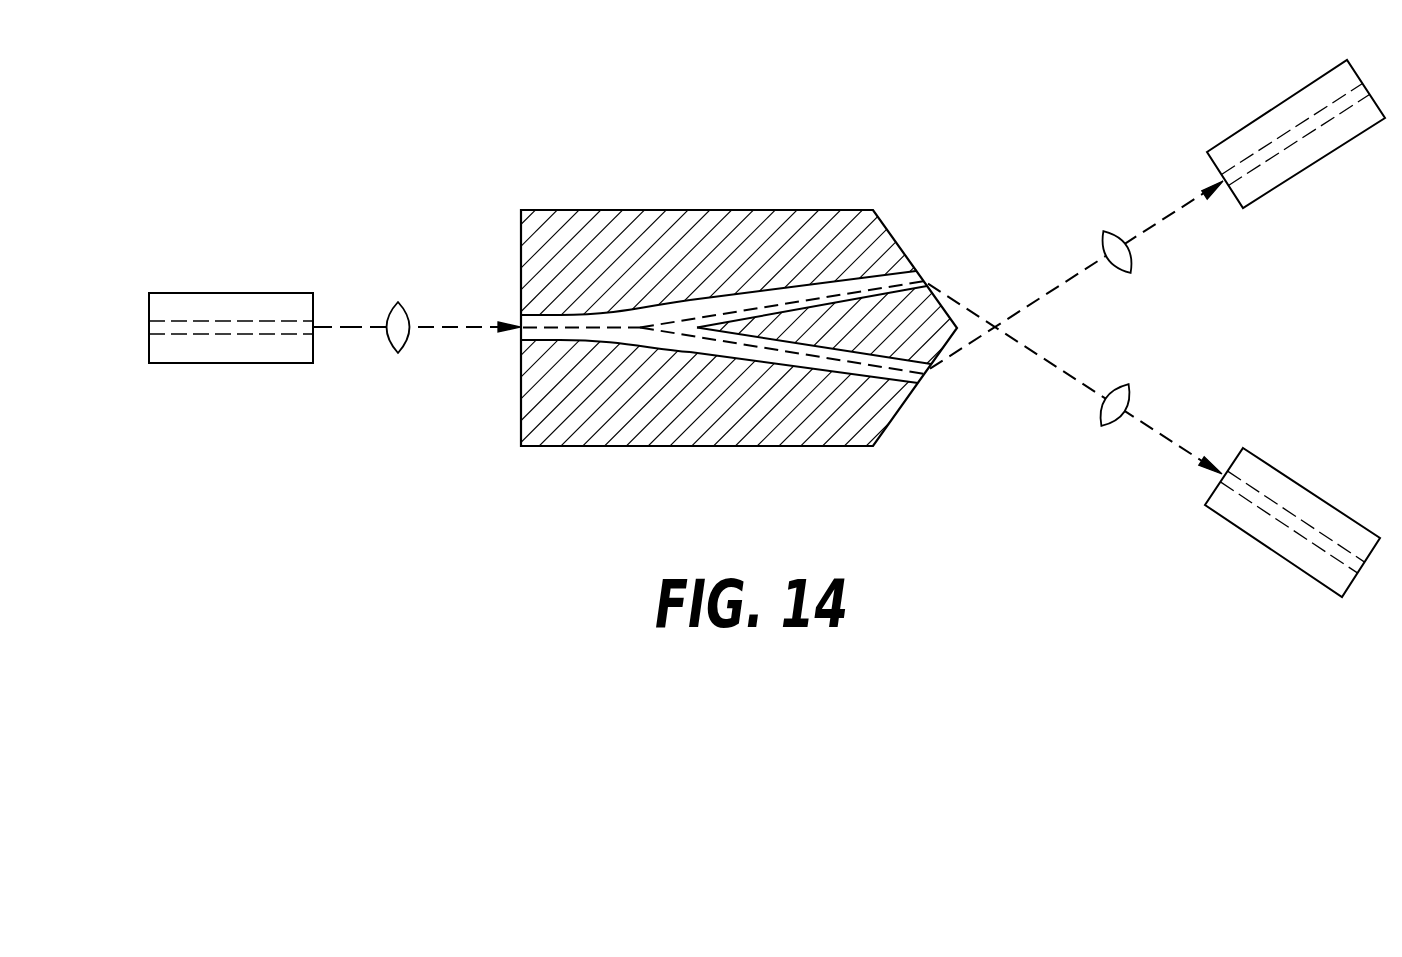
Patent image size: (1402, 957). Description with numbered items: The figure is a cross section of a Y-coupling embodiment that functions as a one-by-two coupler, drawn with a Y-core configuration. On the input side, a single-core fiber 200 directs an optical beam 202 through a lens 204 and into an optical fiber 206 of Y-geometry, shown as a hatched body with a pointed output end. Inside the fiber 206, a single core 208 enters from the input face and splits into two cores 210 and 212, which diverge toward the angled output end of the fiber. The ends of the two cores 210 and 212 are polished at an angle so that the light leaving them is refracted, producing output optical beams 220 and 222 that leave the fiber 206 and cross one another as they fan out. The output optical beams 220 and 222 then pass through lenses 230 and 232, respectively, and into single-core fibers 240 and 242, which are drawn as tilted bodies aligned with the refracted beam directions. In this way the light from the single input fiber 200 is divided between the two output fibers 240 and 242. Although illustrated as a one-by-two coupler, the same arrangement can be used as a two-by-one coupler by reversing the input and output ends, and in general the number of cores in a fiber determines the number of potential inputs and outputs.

The single-core fiber 200 is at (223, 292).
The optical beam 202 is at (340, 327).
The lens 204 is at (402, 302).
The optical fiber of Y-geometry 206 is at (667, 445).
The single core 208 is at (577, 313).
The core 210 is at (797, 289).
The core 212 is at (803, 368).
The output optical beam 220 is at (1035, 355).
The output optical beam 222 is at (1065, 282).
The lens 230 is at (1108, 427).
The lens 232 is at (1113, 227).
The single-core fiber 240 is at (1317, 490).
The single-core fiber 242 is at (1290, 90).